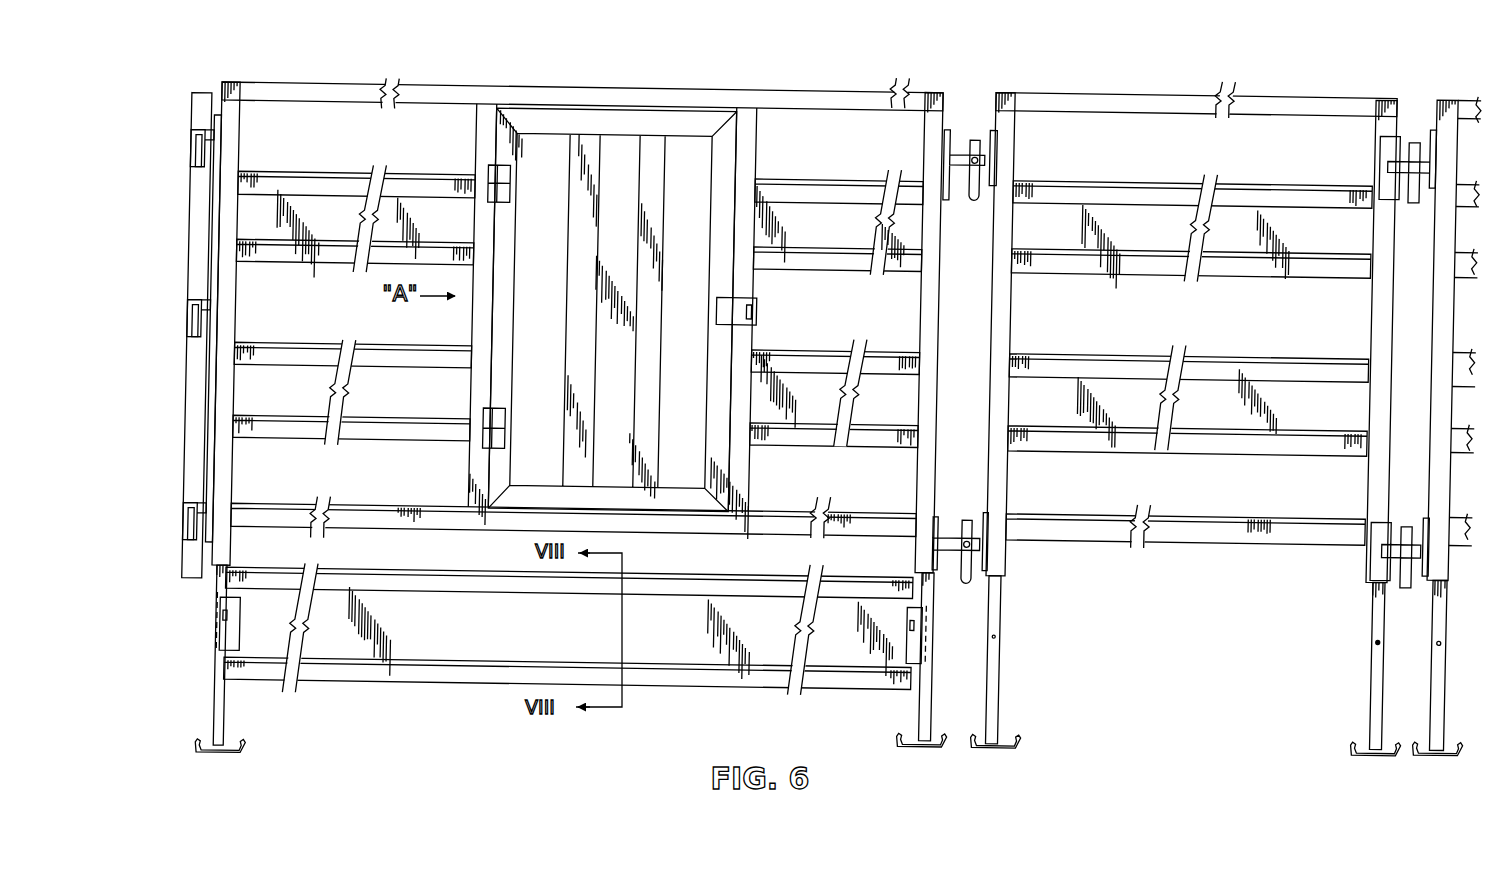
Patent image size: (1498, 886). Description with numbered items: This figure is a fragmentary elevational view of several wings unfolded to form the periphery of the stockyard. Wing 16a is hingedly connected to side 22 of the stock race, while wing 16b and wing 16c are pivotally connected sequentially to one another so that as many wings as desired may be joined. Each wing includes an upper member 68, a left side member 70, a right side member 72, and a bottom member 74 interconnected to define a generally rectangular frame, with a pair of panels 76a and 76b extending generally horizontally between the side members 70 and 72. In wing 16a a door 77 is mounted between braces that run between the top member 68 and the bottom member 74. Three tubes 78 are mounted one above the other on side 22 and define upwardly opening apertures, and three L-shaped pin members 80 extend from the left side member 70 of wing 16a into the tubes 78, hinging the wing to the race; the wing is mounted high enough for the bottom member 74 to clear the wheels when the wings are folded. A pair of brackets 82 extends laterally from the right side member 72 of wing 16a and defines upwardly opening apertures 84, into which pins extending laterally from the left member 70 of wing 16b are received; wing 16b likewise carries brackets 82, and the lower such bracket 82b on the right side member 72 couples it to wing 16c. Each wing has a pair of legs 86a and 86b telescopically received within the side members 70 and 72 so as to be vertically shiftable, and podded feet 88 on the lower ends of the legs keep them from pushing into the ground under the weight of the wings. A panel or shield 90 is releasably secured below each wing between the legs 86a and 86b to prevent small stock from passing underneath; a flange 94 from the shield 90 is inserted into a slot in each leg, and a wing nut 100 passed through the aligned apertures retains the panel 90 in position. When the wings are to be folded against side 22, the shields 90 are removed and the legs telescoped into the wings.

The side 22 is at (200, 88).
The L-shaped pin member 80 is at (190, 505).
The tube 78 is at (190, 527).
The left side member 70 is at (1450, 152).
The upper member 68 is at (1060, 100).
The right side member 72 is at (1372, 300).
The panel 76a is at (345, 268).
The panel 76b is at (442, 349).
The bottom member 74 is at (1240, 545).
The door 77 is at (570, 108).
The wing 16a is at (757, 93).
The wing 16b is at (1165, 93).
The wing 16c is at (1455, 93).
The bracket 82 is at (957, 156).
The lower hinge assembly 82b is at (1380, 560).
The aperture 84 is at (962, 558).
The panel 90 is at (445, 690).
The flange 94 is at (925, 650).
The wing nut 100 is at (930, 625).
The leg 86a is at (1445, 672).
The leg 86b is at (1373, 655).
The podded foot 88 is at (1452, 752).